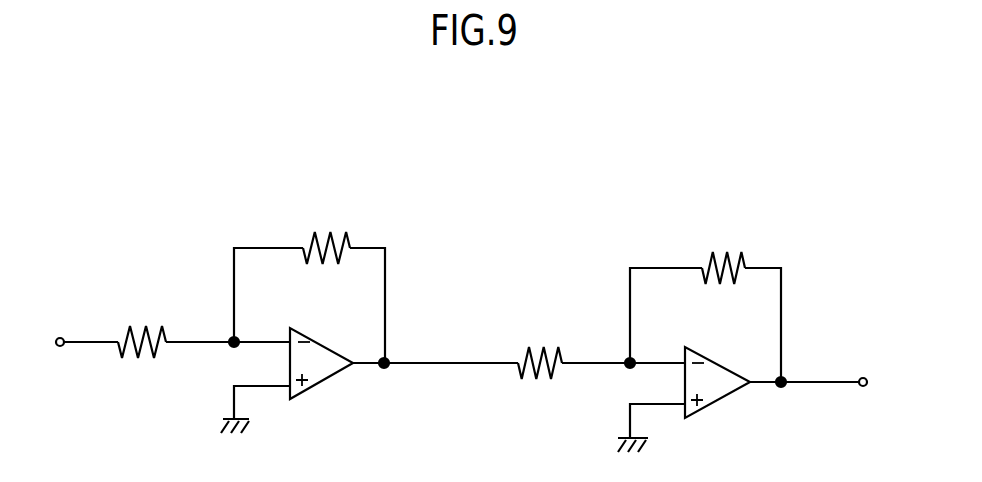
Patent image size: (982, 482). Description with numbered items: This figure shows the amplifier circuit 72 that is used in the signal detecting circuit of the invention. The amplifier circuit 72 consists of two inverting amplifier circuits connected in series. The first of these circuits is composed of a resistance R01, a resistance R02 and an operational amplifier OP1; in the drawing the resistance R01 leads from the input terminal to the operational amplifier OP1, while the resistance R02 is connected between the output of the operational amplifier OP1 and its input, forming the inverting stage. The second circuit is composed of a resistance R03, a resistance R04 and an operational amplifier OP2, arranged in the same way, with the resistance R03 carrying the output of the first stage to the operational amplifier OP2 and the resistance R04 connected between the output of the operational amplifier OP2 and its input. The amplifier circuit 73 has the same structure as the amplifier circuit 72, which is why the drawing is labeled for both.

The amplifier circuit 72 is at (227, 232).
The amplifier circuit 73 is at (461, 293).
The resistance R01 is at (142, 326).
The resistance R02 is at (326, 232).
The resistance R03 is at (540, 347).
The resistance R04 is at (723, 252).
The operational amplifier OP1 is at (328, 371).
The operational amplifier OP2 is at (726, 391).